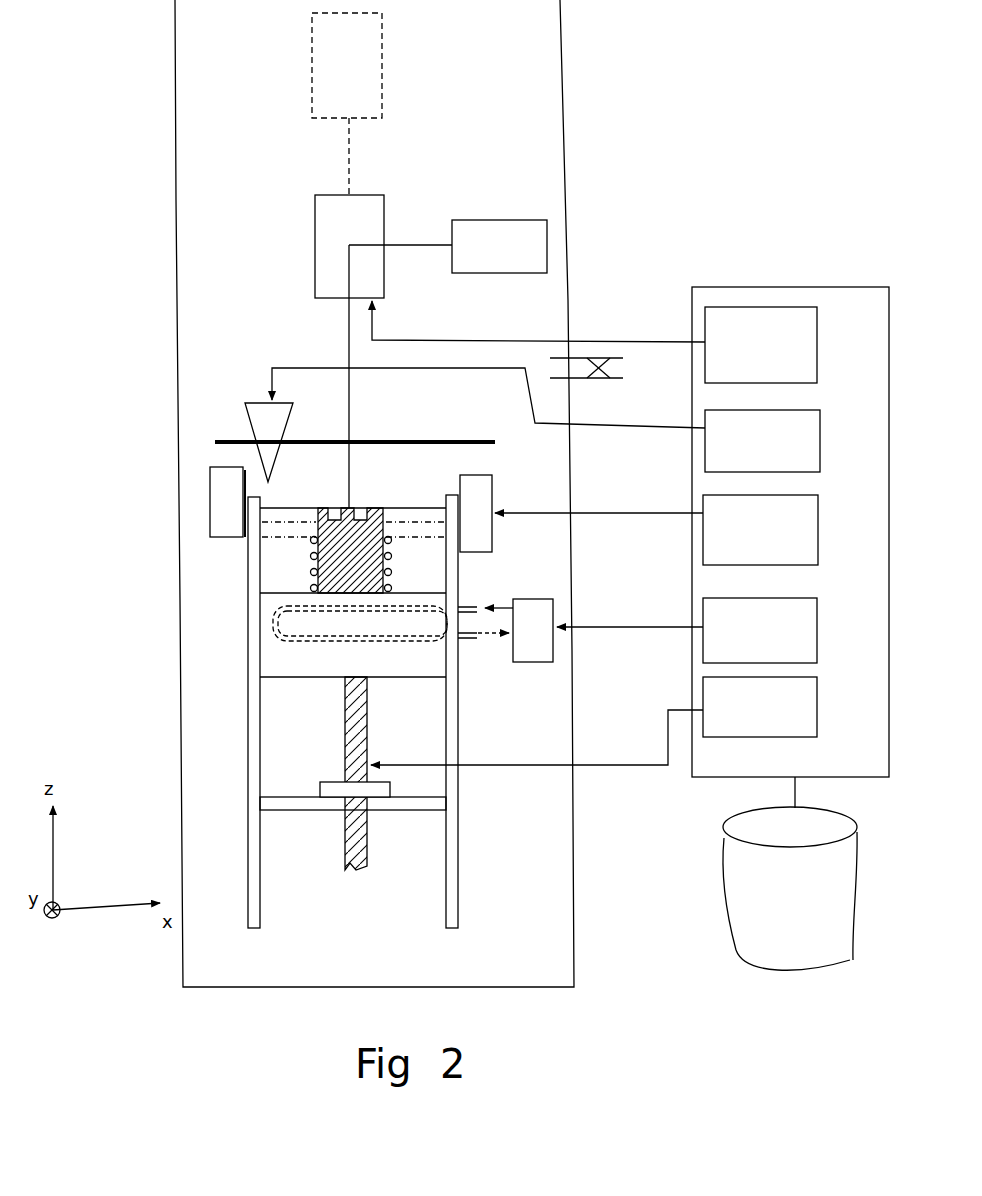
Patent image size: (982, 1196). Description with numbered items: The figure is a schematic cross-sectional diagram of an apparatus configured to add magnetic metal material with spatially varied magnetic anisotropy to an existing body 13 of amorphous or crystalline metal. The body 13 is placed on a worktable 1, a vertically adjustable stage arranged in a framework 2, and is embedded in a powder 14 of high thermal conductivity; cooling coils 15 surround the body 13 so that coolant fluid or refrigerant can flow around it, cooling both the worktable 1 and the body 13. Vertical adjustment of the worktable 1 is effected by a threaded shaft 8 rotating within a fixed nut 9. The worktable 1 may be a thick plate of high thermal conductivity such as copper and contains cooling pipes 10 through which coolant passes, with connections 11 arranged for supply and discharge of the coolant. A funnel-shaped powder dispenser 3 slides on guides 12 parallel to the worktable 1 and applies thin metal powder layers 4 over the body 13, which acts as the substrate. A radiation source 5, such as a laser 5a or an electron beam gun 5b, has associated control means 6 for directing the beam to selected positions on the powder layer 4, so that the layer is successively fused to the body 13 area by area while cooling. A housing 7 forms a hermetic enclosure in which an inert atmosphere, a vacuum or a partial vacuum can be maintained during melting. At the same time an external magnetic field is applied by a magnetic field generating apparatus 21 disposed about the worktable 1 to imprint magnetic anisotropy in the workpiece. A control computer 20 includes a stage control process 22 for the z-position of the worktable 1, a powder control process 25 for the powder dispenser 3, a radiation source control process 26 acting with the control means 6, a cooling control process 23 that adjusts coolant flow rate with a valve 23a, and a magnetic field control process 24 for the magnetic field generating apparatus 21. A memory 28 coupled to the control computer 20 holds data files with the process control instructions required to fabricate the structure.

The worktable 1 is at (280, 605).
The framework 2 is at (450, 702).
The powder dispenser 3 is at (268, 418).
The powder layer 4 is at (408, 530).
The radiation source 5 is at (429, 143).
The laser 5a is at (509, 265).
The electron beam gun 5b is at (361, 88).
The control means 6 is at (332, 223).
The housing 7 is at (573, 662).
The threaded shaft 8 is at (348, 730).
The nut 9 is at (340, 790).
The cooling pipes 10 is at (408, 640).
The connections 11 is at (465, 633).
The guides 12 is at (430, 437).
The body 13 is at (335, 562).
The powder 14 is at (422, 567).
The cooling coils 15 is at (310, 574).
The control computer 20 is at (833, 285).
The magnetic field generating apparatus 21 is at (210, 480).
The stage control process 22 is at (818, 713).
The cooling control process 23 is at (818, 632).
The valve 23a is at (553, 605).
The magnetic field control process 24 is at (820, 535).
The powder control process 25 is at (822, 447).
The radiation source control process 26 is at (818, 352).
The memory 28 is at (723, 893).